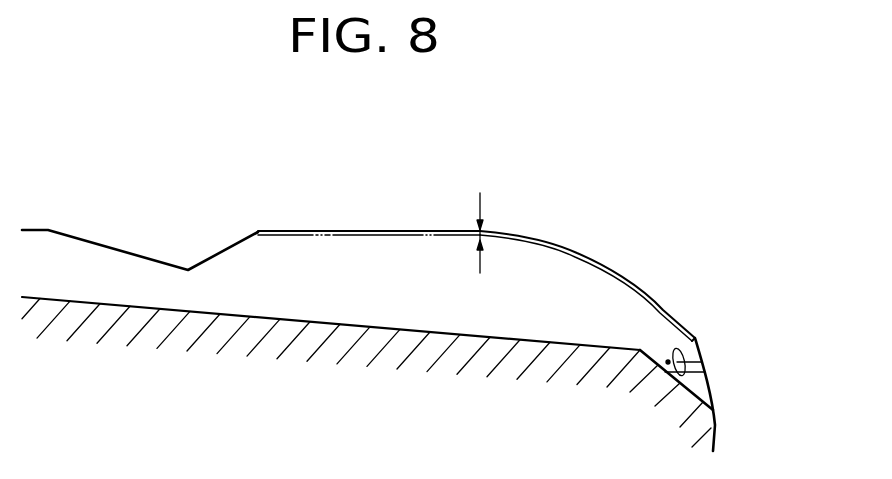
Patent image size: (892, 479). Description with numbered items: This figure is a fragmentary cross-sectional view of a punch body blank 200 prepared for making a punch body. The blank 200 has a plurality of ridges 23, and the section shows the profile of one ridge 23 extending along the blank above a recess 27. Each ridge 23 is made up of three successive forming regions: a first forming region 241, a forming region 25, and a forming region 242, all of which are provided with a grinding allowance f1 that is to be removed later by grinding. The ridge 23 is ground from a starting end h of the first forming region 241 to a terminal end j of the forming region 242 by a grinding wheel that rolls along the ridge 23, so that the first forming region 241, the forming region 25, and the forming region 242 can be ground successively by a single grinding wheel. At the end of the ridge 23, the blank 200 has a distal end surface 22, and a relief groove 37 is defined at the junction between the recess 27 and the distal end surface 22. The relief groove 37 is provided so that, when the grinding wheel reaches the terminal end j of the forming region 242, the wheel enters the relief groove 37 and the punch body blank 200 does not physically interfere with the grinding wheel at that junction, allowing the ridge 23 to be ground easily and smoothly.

The distal end surface 22 is at (718, 437).
The ridge 23 is at (621, 268).
The forming region 25 is at (577, 250).
The recess 27 is at (247, 315).
The relief groove 37 is at (669, 380).
The punch body blank 200 is at (329, 383).
The first forming region 241 is at (345, 230).
The forming region 242 is at (665, 312).
The starting end h is at (258, 230).
The terminal end j is at (697, 345).
The grinding allowance f1 is at (490, 230).